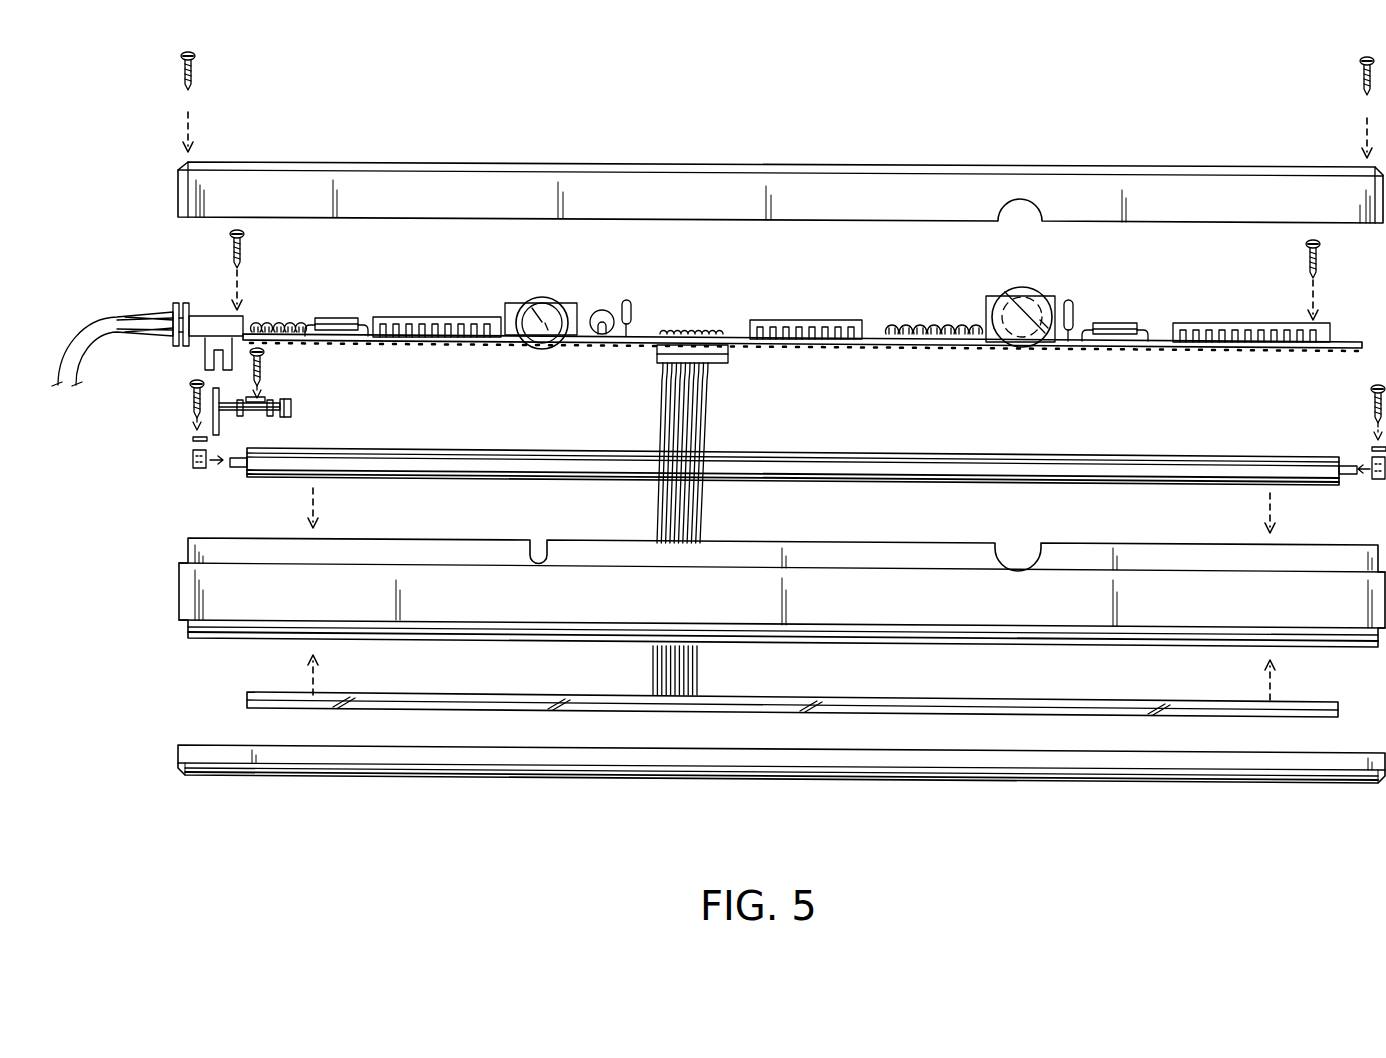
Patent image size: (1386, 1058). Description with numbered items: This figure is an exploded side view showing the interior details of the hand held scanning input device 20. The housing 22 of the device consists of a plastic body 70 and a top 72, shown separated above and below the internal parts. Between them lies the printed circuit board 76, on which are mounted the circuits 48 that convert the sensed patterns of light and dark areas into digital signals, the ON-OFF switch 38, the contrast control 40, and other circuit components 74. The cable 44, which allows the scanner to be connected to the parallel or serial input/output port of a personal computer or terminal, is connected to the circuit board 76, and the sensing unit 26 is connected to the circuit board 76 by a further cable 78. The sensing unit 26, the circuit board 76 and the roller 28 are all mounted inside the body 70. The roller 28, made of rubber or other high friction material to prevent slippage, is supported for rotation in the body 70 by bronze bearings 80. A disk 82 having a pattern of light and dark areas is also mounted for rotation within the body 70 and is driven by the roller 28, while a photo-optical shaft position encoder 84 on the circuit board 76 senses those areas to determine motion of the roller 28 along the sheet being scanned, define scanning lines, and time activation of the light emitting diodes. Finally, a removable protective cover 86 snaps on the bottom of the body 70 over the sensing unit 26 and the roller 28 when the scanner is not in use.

The hand held scanning input device 20 is at (115, 792).
The housing 22 is at (1232, 162).
The sensing unit 26 is at (236, 708).
The roller 28 is at (915, 458).
The ON-OFF switch 38 is at (1022, 295).
The contrast control 40 is at (552, 305).
The cable 44 is at (100, 320).
The circuits 48 is at (432, 317).
The plastic body 70 is at (207, 585).
The top 72 is at (778, 190).
The circuit components 74 is at (328, 318).
The printed circuit board 76 is at (875, 342).
The cable 78 is at (705, 410).
The bronze bearings 80 is at (198, 470).
The disk 82 is at (220, 432).
The photo-optical shaft position encoder 84 is at (205, 352).
The removable protective cover 86 is at (770, 785).